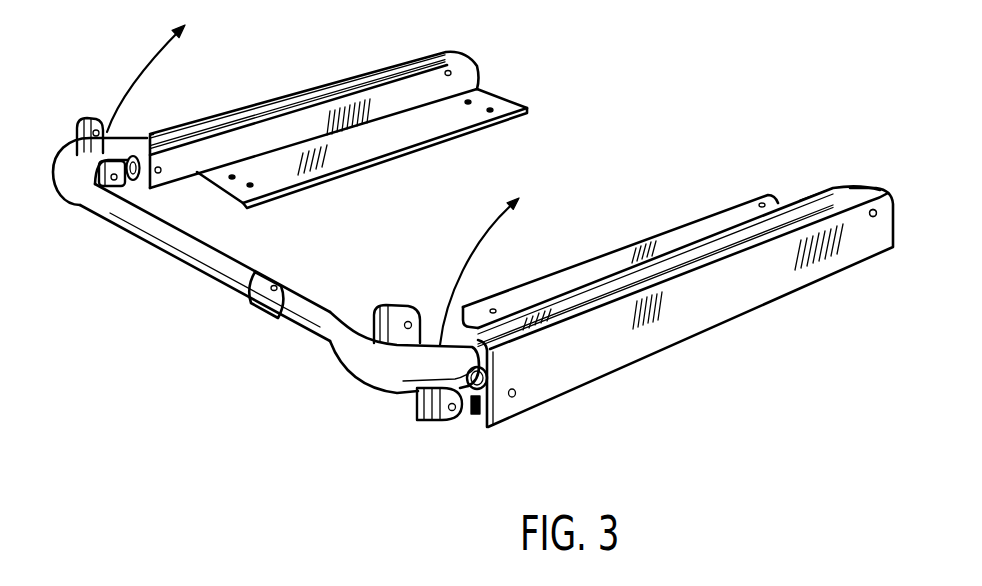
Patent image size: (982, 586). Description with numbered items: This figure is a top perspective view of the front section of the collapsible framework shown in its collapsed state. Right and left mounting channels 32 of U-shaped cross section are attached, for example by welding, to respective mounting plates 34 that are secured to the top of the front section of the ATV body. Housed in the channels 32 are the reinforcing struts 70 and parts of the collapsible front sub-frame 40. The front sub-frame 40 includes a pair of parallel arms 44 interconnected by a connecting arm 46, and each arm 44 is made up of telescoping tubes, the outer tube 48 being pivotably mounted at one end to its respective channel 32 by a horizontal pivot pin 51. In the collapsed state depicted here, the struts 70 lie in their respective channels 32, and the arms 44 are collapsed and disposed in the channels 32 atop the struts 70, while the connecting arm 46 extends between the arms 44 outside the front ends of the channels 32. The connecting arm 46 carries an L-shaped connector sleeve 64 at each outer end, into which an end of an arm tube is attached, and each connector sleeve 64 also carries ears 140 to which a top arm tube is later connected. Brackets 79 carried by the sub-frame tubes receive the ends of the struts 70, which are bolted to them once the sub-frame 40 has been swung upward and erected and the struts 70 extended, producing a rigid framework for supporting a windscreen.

The mounting channel 32 is at (466, 62).
The mounting plate 34 is at (422, 133).
The front sub-frame 40 is at (210, 290).
The arm 44 is at (168, 114).
The connecting arm 46 is at (302, 333).
The telescoping tube 48 is at (835, 190).
The horizontal pivot pin 51 is at (880, 212).
The L-shaped connector sleeve 64 is at (377, 370).
The reinforcing strut 70 is at (477, 414).
The bracket 79 is at (107, 177).
The ears 140 is at (98, 120).